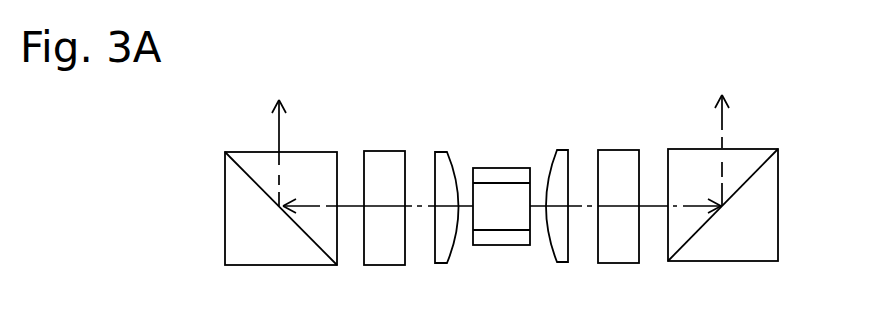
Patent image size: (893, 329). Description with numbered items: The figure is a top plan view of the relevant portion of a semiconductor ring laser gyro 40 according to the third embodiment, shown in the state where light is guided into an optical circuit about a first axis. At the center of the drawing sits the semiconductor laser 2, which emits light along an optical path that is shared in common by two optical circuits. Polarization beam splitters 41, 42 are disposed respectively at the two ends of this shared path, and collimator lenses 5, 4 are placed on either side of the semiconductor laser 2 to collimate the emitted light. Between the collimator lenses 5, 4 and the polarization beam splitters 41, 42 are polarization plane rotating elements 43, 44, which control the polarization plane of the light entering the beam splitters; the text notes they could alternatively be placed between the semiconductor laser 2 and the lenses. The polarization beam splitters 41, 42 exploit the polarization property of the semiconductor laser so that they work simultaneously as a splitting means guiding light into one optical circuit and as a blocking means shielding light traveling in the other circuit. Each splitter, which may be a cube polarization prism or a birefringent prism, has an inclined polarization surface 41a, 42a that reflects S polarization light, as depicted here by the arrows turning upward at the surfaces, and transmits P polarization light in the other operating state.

The semiconductor ring laser gyro 40 is at (505, 135).
The polarization beam splitter 41 is at (270, 265).
The polarization surface 41a is at (243, 172).
The polarization beam splitter 42 is at (722, 261).
The polarization surface 42a is at (756, 171).
The polarization plane rotating element 43 is at (385, 265).
The polarization plane rotating element 44 is at (615, 263).
The collimator lens 5 is at (440, 263).
The collimator lens 4 is at (560, 262).
The semiconductor laser 2 is at (505, 245).